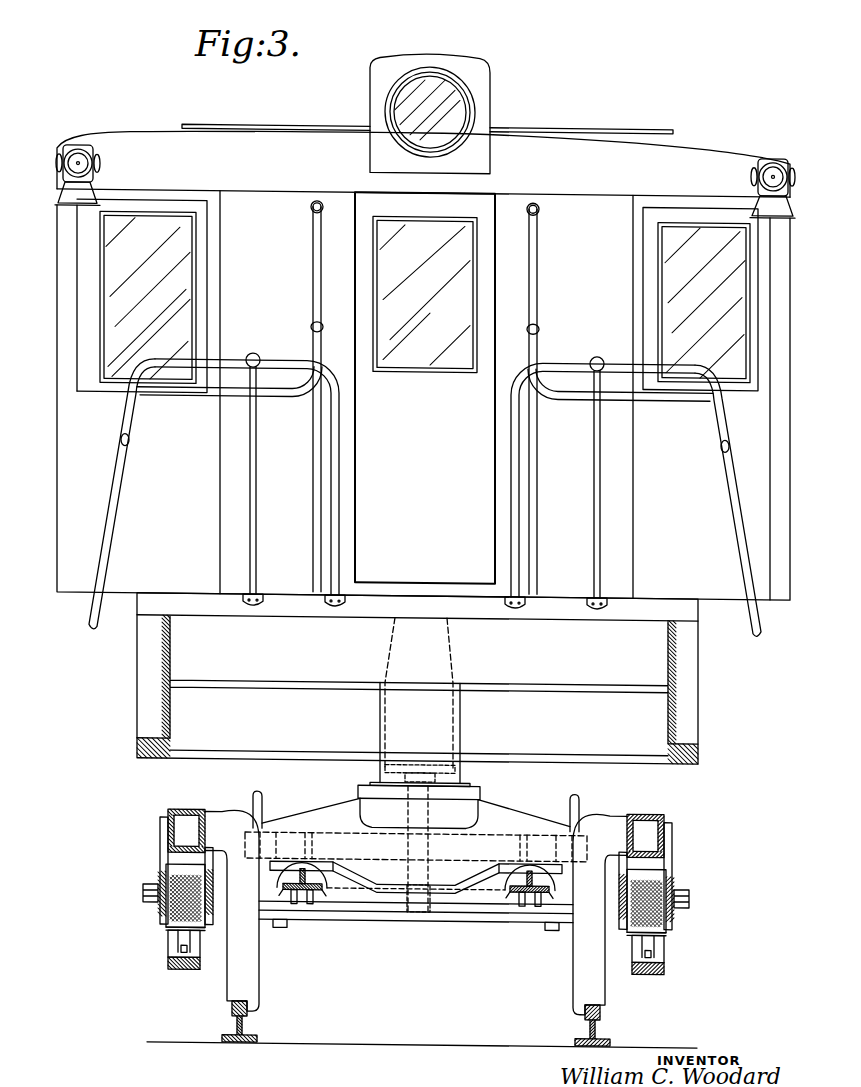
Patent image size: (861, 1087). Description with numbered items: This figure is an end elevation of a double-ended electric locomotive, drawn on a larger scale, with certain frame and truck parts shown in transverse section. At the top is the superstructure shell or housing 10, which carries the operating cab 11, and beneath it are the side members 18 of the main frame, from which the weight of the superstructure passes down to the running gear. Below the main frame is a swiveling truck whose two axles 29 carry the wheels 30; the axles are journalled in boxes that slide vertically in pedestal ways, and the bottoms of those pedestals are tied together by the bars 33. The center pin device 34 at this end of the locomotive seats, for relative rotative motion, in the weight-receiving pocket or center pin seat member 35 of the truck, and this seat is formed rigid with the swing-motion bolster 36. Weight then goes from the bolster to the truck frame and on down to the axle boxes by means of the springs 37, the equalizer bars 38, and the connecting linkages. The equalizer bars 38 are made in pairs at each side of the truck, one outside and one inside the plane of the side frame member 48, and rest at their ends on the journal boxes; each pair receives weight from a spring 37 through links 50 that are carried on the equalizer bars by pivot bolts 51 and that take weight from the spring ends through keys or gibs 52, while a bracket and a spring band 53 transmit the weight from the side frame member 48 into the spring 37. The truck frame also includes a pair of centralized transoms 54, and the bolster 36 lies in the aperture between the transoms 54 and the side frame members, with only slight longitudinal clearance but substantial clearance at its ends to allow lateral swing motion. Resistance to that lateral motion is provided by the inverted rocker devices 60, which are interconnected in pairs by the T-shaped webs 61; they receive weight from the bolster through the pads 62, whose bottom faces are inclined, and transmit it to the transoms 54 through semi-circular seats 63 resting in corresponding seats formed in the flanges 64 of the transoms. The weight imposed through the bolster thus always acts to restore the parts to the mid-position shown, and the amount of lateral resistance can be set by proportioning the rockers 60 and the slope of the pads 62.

The superstructure shell or housing 10 is at (57, 560).
The operating cab 11 is at (397, 392).
The side members of the main frame 18 is at (676, 701).
The axle 29 is at (372, 923).
The wheel 30 is at (573, 991).
The pedestal tie bar 33 is at (650, 977).
The center pin device 34 is at (385, 774).
The center pin seat member 35 is at (477, 795).
The swing-motion bolster 36 is at (518, 830).
The spring 37 is at (663, 931).
The equalizer bar 38 is at (213, 832).
The side frame member 48 is at (650, 818).
The link 50 is at (645, 945).
The pivot bolt 51 is at (683, 894).
The key or gib 52 is at (655, 942).
The spring band 53 is at (663, 877).
The transom 54 is at (262, 825).
The inverted rocker device 60 is at (511, 878).
The T-shaped web 61 is at (518, 897).
The pad 62 is at (505, 868).
The semi-circular seat 63 is at (530, 906).
The transom flange 64 is at (448, 905).